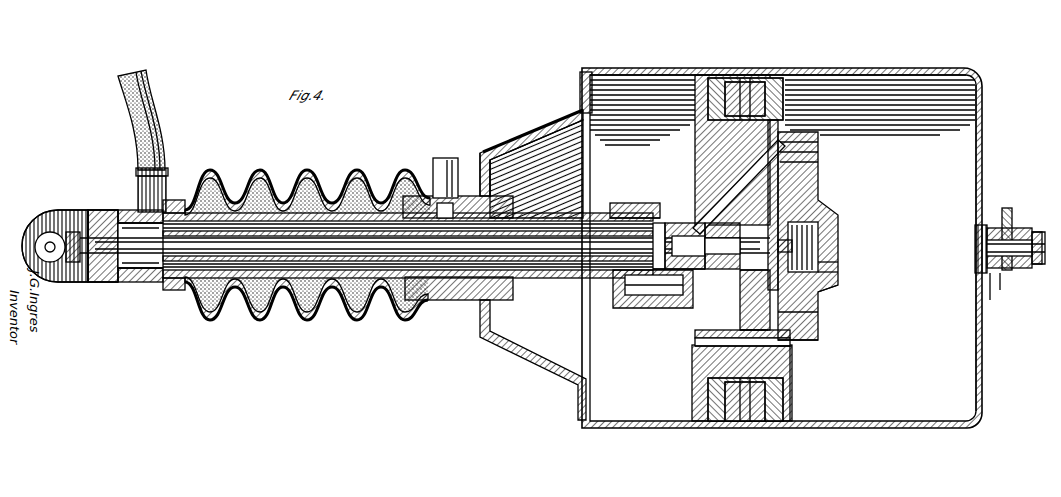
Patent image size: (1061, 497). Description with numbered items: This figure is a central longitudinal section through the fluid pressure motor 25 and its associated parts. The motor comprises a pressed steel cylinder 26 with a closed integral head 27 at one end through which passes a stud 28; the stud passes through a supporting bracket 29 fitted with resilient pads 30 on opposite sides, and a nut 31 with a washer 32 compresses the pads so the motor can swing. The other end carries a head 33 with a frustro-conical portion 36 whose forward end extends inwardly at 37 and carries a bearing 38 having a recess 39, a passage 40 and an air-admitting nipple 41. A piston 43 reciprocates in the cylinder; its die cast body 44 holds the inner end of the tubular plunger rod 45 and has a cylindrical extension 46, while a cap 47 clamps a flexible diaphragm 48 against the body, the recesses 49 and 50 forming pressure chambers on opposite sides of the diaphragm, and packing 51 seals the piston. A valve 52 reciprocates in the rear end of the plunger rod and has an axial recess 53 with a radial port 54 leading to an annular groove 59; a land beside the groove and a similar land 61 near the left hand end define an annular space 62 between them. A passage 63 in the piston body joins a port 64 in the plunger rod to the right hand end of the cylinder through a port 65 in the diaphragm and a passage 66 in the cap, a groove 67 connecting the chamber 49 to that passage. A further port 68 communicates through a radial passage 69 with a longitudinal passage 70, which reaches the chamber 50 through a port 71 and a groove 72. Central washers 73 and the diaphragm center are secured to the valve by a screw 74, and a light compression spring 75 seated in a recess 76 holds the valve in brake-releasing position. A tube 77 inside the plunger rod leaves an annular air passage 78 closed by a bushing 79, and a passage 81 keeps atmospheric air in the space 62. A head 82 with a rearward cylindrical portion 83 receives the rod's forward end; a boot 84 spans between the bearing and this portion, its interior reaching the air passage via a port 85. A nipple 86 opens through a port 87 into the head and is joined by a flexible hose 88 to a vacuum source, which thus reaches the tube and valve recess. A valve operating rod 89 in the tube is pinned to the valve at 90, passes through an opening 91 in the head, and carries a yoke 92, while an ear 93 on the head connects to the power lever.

The motor 25 is at (863, 65).
The cylinder 26 is at (916, 72).
The head 27 is at (985, 92).
The stud 28 is at (975, 244).
The supporting bracket 29 is at (1008, 210).
The resilient pads 30 is at (1000, 292).
The nut 31 is at (1030, 270).
The washer 32 is at (1028, 228).
The head 33 is at (580, 92).
The frustro-conical portion 36 is at (527, 133).
The inwardly extending forward end 37 is at (480, 165).
The bearing 38 is at (455, 301).
The recess 39 is at (454, 208).
The passage 40 is at (402, 175).
The nipple 41 is at (446, 165).
The piston 43 is at (694, 392).
The piston body 44 is at (675, 138).
The tubular plunger rod 45 is at (550, 279).
The cylindrical extension 46 is at (620, 203).
The cap 47 is at (830, 290).
The flexible diaphragm 48 is at (818, 332).
The recess 49 is at (754, 300).
The recess 50 is at (818, 315).
The packing 51 is at (768, 75).
The valve 52 is at (768, 228).
The axial recess 53 is at (727, 246).
The radial port 54 is at (722, 236).
The annular groove 59 is at (755, 300).
The land 61 is at (622, 308).
The annular space 62 is at (650, 308).
The passage 63 is at (700, 182).
The port 64 is at (662, 222).
The port 65 is at (815, 160).
The passage 66 is at (815, 148).
The groove 67 is at (815, 172).
The port 68 is at (695, 335).
The radial passage 69 is at (700, 360).
The longitudinal passage 70 is at (698, 344).
The port 71 is at (792, 362).
The groove 72 is at (795, 350).
The central washers 73 is at (818, 202).
The screw 74 is at (838, 245).
The compression spring 75 is at (838, 272).
The recess 76 is at (840, 262).
The tube 77 is at (528, 231).
The annular air passage 78 is at (556, 231).
The bushing 79 is at (642, 215).
The passage 81 is at (670, 300).
The head 82 is at (98, 210).
The cylindrical portion 83 is at (130, 283).
The boot 84 is at (272, 178).
The port 85 is at (228, 195).
The nipple 86 is at (138, 180).
The port 87 is at (128, 220).
The flexible hose 88 is at (163, 118).
The valve operating rod 89 is at (578, 255).
The pin 90 is at (745, 205).
The opening 91 is at (100, 283).
The yoke 92 is at (45, 243).
The ear 93 is at (52, 215).